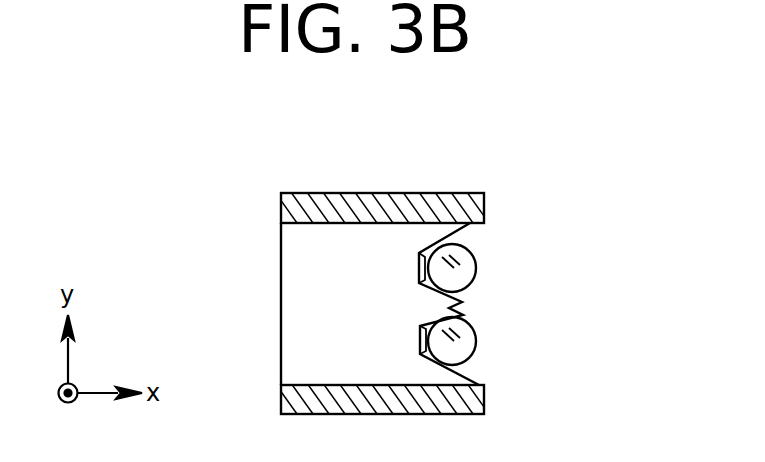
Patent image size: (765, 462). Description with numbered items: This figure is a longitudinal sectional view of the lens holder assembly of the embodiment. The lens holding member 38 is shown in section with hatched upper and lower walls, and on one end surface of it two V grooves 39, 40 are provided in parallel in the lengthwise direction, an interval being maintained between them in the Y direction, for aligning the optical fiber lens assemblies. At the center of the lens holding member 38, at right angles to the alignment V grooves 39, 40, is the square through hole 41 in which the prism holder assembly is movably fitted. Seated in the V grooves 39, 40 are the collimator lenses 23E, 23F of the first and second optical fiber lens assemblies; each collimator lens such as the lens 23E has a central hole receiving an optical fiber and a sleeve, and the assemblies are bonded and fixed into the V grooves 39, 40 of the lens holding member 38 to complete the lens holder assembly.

The lens holding member 38 is at (388, 212).
The V groove 39 is at (477, 227).
The V groove 40 is at (476, 378).
The square through hole 41 is at (312, 224).
The collimator lens 23E is at (470, 262).
The collimator lens 23F is at (473, 339).